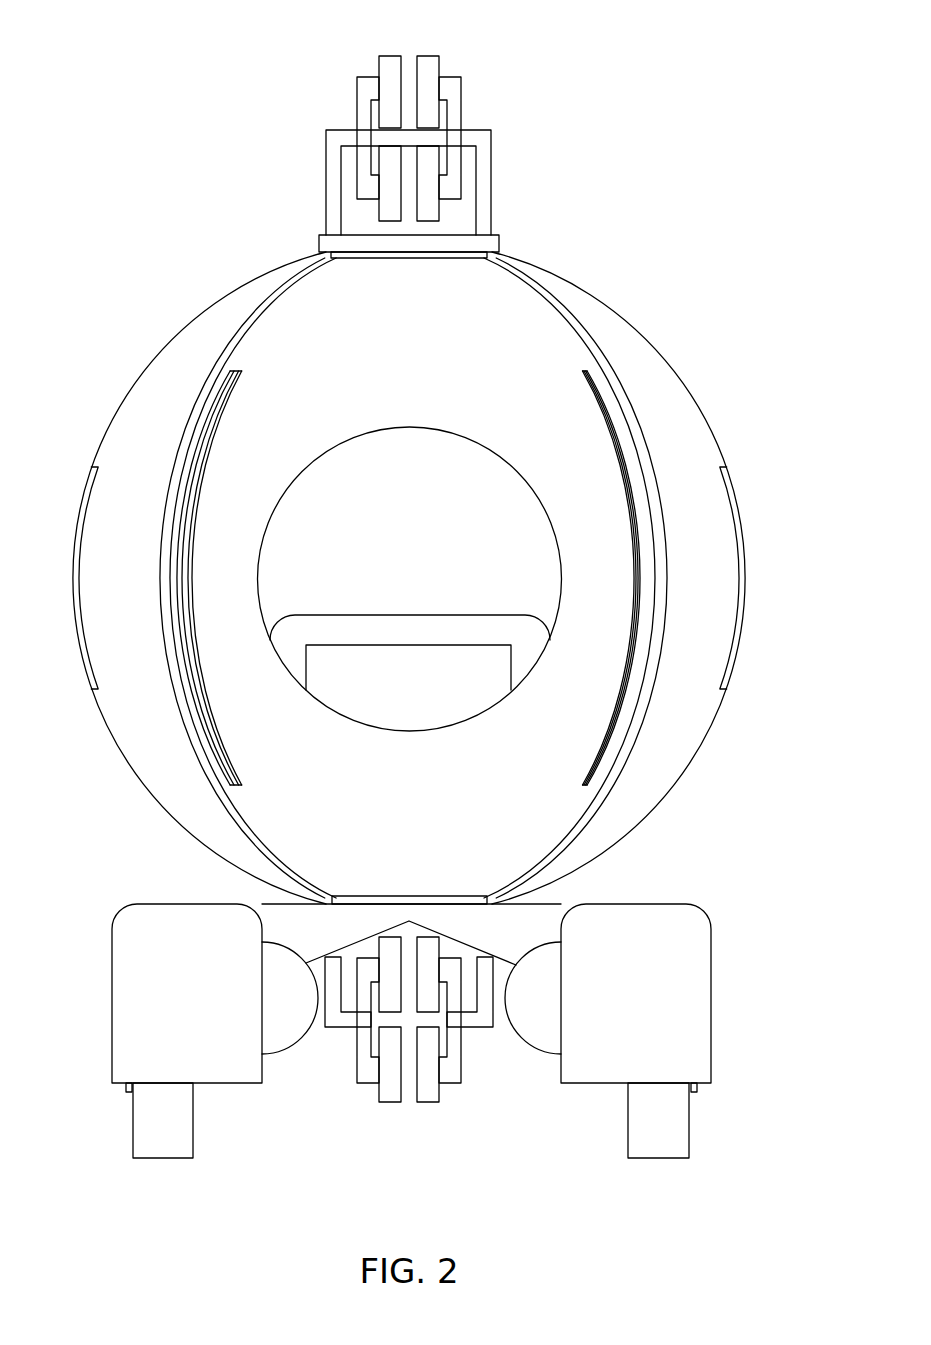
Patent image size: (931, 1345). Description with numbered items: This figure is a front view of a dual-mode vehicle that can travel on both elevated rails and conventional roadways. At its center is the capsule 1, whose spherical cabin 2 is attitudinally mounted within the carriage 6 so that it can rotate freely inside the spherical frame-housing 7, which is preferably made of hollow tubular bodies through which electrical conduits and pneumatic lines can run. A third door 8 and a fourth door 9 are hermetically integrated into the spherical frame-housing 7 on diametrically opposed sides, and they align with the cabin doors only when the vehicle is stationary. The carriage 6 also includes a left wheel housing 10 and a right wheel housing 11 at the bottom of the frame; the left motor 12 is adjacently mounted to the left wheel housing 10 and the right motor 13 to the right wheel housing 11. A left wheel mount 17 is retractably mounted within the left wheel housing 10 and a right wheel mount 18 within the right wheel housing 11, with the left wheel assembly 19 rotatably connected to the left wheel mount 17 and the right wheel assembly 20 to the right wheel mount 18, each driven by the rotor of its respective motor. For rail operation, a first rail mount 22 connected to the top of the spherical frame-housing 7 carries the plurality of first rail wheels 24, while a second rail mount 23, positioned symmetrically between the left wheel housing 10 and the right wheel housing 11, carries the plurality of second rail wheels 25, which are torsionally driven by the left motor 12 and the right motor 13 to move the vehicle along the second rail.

The capsule 1 is at (250, 345).
The spherical cabin 2 is at (272, 315).
The carriage 6 is at (705, 380).
The spherical frame-housing 7 is at (610, 312).
The third door 8 is at (78, 582).
The fourth door 9 is at (741, 583).
The left wheel housing 10 is at (705, 955).
The right wheel housing 11 is at (112, 975).
The left motor 12 is at (553, 1050).
The right motor 13 is at (270, 1053).
The left wheel mount 17 is at (693, 1093).
The right wheel mount 18 is at (130, 1093).
The left wheel assembly 19 is at (667, 1160).
The right wheel assembly 20 is at (165, 1160).
The first rail mount 22 is at (330, 187).
The second rail mount 23 is at (348, 1022).
The plurality of first rail wheels 24 is at (388, 60).
The plurality of second rail wheels 25 is at (385, 954).